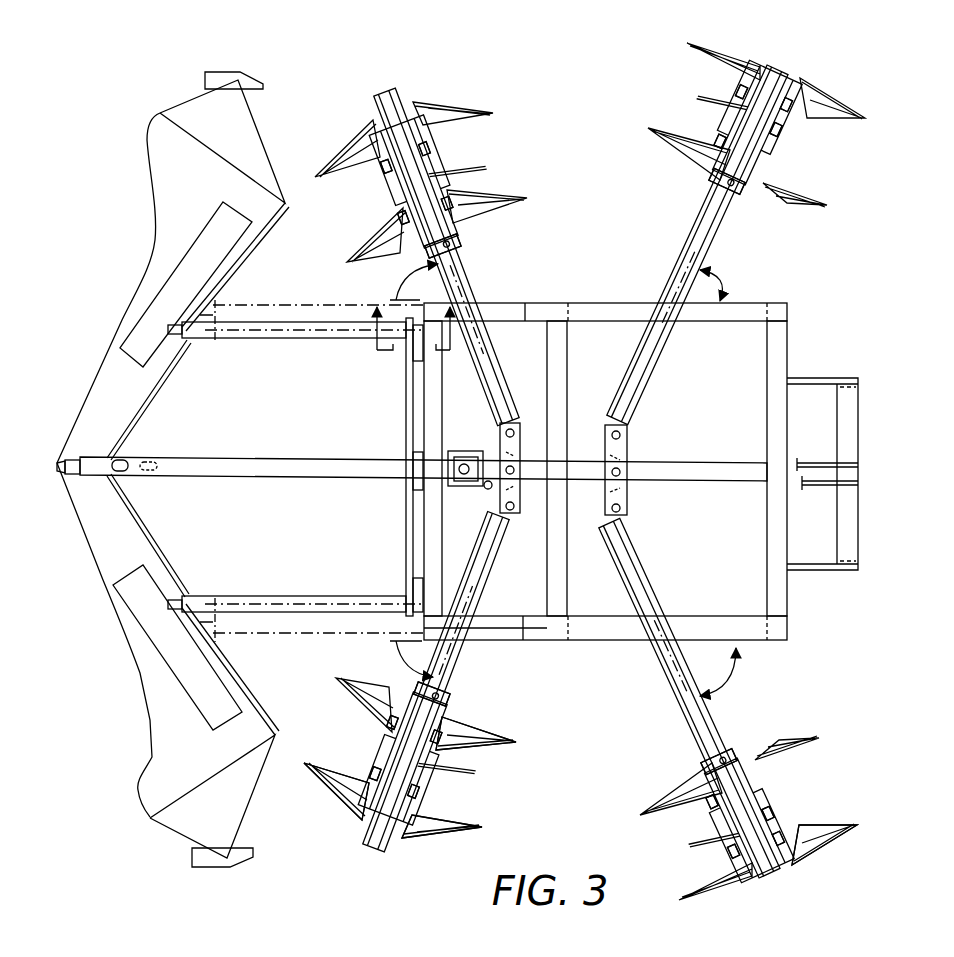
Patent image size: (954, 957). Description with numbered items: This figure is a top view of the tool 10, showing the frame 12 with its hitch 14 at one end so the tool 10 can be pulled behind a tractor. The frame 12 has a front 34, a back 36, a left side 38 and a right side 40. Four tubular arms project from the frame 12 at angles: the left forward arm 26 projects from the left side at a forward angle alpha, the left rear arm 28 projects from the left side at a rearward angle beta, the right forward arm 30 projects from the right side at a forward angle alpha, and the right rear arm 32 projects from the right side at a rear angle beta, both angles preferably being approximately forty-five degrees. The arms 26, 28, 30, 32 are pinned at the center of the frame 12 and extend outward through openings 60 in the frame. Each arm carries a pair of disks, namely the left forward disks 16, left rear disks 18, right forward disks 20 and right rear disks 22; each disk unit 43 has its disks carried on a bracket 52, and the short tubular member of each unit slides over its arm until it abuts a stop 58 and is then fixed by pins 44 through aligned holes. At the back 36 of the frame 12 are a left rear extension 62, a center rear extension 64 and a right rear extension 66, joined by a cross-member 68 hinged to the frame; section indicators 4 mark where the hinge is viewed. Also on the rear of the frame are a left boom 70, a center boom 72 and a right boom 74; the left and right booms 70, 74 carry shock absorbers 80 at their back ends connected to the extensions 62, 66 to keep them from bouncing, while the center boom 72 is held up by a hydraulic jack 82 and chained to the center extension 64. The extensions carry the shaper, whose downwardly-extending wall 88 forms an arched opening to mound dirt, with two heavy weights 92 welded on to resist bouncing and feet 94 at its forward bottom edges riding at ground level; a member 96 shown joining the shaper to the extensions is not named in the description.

The section line 4- 4 is at (405, 341).
The tool 10 is at (895, 301).
The frame 12 is at (596, 302).
The hitch 14 is at (863, 378).
The left forward disks 16 is at (862, 109).
The left rear disks 18 is at (472, 106).
The right forward disks 20 is at (856, 826).
The right rear disks 22 is at (455, 826).
The left forward arm 26 is at (797, 76).
The left rear arm 28 is at (404, 85).
The right forward arm 30 is at (688, 714).
The right rear arm 32 is at (362, 834).
The front 34 is at (789, 346).
The back 36 is at (444, 542).
The left side 38 is at (562, 303).
The right side 40 is at (566, 510).
The disk unit 43 is at (351, 131).
The pins 44 is at (395, 716).
The bracket 52 is at (398, 186).
The stop 58 is at (452, 246).
The openings 60 is at (483, 300).
The left rear extension 62 is at (278, 339).
The center rear extension 64 is at (84, 462).
The right rear extension 66 is at (232, 597).
The cross-member 68 is at (405, 521).
The left boom 70 is at (297, 322).
The center boom 72 is at (128, 452).
The right boom 74 is at (305, 636).
The shock absorbers 80 is at (216, 306).
The hydraulic jack 82 is at (466, 450).
The wall 88 is at (185, 174).
The weights 92 is at (208, 234).
The feet 94 is at (260, 78).
The brace 96 is at (270, 242).